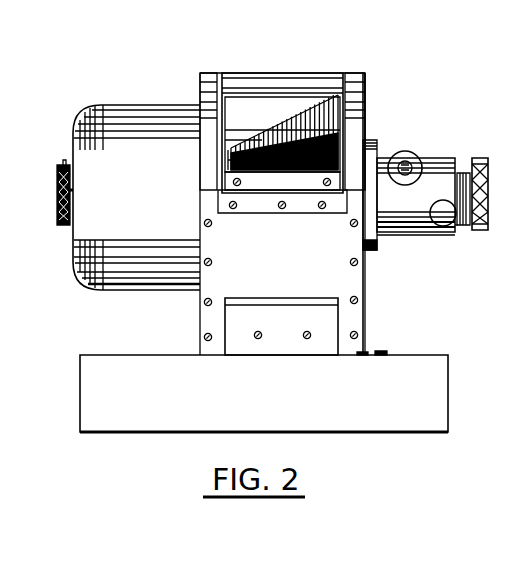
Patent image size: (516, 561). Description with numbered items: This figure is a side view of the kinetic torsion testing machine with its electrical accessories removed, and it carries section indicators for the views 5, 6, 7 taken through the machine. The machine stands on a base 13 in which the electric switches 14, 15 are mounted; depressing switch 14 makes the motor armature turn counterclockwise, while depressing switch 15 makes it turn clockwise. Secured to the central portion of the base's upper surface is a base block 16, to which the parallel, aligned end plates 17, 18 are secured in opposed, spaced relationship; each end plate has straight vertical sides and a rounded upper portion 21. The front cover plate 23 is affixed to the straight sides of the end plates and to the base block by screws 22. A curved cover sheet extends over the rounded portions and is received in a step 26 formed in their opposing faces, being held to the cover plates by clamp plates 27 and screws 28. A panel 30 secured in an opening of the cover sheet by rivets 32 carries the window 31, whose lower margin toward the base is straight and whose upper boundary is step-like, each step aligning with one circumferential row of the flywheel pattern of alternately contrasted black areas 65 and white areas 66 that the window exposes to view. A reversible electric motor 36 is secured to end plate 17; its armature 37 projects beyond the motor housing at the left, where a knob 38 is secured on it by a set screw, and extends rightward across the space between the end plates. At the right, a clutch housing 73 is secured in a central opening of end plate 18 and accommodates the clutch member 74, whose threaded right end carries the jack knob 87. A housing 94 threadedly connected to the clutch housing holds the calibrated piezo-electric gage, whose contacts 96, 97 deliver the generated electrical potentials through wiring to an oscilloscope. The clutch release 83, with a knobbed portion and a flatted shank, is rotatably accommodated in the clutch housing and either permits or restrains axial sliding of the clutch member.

The base 13 is at (120, 365).
The electric switch 14 is at (368, 352).
The electric switch 15 is at (385, 352).
The base block 16 is at (274, 318).
The end plate 17 is at (197, 160).
The end plate 18 is at (368, 93).
The rounded upper portion 21 is at (211, 82).
The screws 22 is at (255, 333).
The front cover plate 23 is at (363, 282).
The step 26 is at (222, 132).
The clamp plates 27 is at (256, 213).
The screws 28 is at (285, 208).
The panel 30 is at (241, 73).
The window 31 is at (292, 125).
The rivets 32 is at (327, 190).
The reversible electric motor 36 is at (135, 118).
The armature 37 is at (72, 193).
The knob 38 is at (62, 163).
The black areas 65 is at (226, 174).
The white areas 66 is at (285, 135).
The clutch housing 73 is at (425, 193).
The clutch member 74 is at (460, 175).
The clutch release 83 is at (459, 228).
The jack knob 87 is at (486, 160).
The housing 94 is at (409, 160).
The contact 96 is at (400, 185).
The contact 97 is at (417, 179).
The section line 5 is at (466, 42).
The section line 6 is at (405, 110).
The section line 7 is at (429, 137).